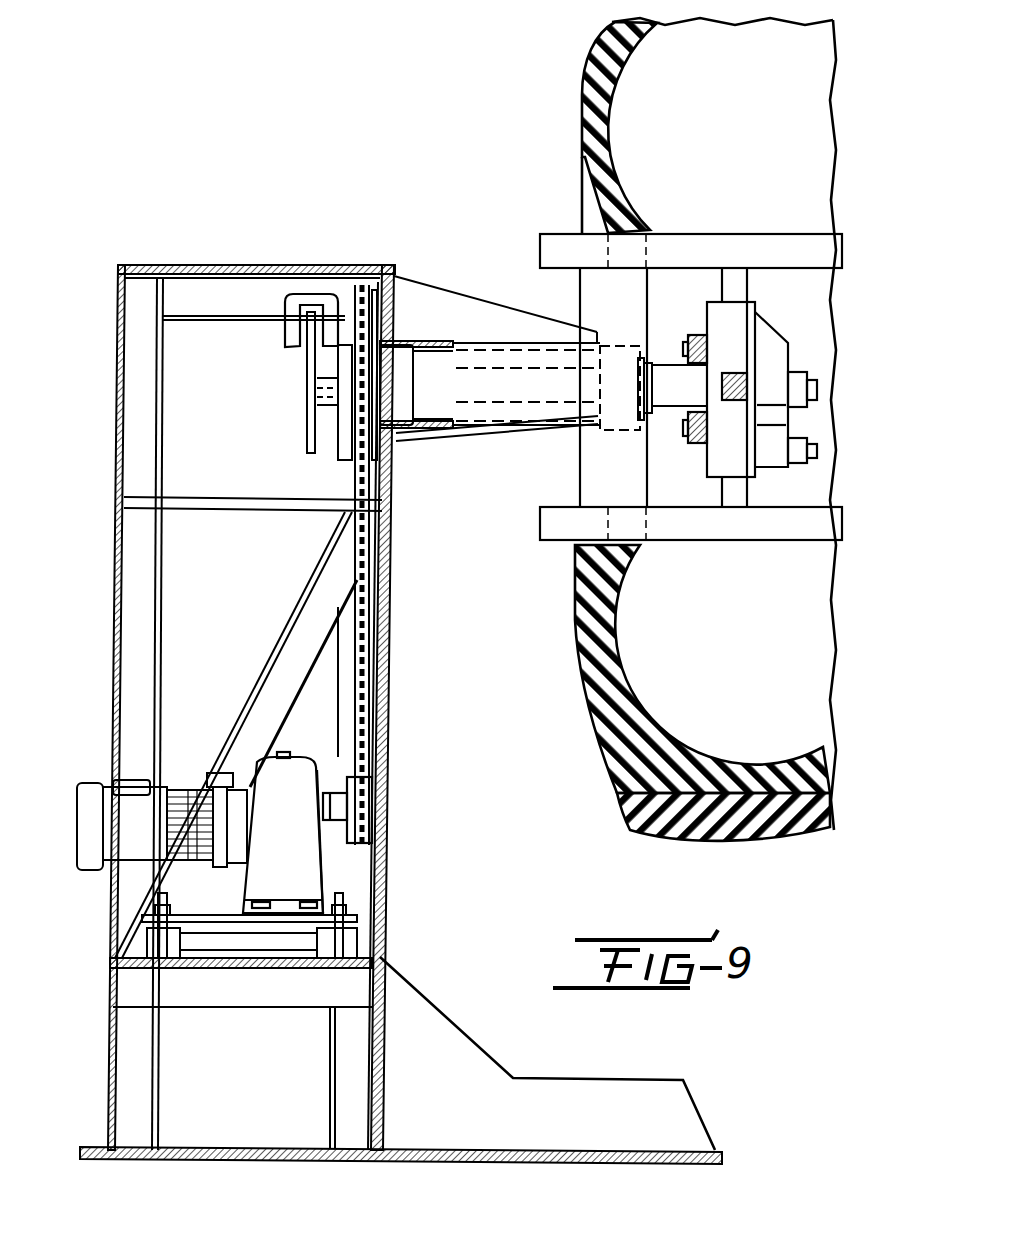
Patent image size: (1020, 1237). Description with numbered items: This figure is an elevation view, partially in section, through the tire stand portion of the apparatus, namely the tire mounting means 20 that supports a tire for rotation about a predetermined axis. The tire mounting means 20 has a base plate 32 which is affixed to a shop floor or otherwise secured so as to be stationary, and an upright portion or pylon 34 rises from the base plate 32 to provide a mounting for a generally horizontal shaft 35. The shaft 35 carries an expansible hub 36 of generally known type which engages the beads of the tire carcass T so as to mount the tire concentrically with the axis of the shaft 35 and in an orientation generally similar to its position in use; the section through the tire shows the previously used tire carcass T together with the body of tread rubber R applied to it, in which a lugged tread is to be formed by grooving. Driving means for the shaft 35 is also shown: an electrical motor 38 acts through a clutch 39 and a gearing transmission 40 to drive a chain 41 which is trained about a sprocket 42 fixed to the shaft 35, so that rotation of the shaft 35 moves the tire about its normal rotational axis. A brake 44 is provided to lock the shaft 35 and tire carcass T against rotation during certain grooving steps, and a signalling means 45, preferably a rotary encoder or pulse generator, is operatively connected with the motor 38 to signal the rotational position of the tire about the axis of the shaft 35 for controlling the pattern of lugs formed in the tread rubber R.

The tire mounting means 20 is at (233, 180).
The base plate 32 is at (468, 1148).
The pylon 34 is at (373, 829).
The shaft 35 is at (430, 373).
The expansible hub 36 is at (803, 338).
The electrical motor 38 is at (150, 839).
The clutch 39 is at (222, 866).
The gearing transmission 40 is at (300, 840).
The chain 41 is at (369, 634).
The sprocket 42 is at (350, 290).
The brake 44 is at (292, 352).
The signalling means 45 is at (226, 770).
The tire carcass T is at (603, 762).
The tread rubber R is at (612, 800).